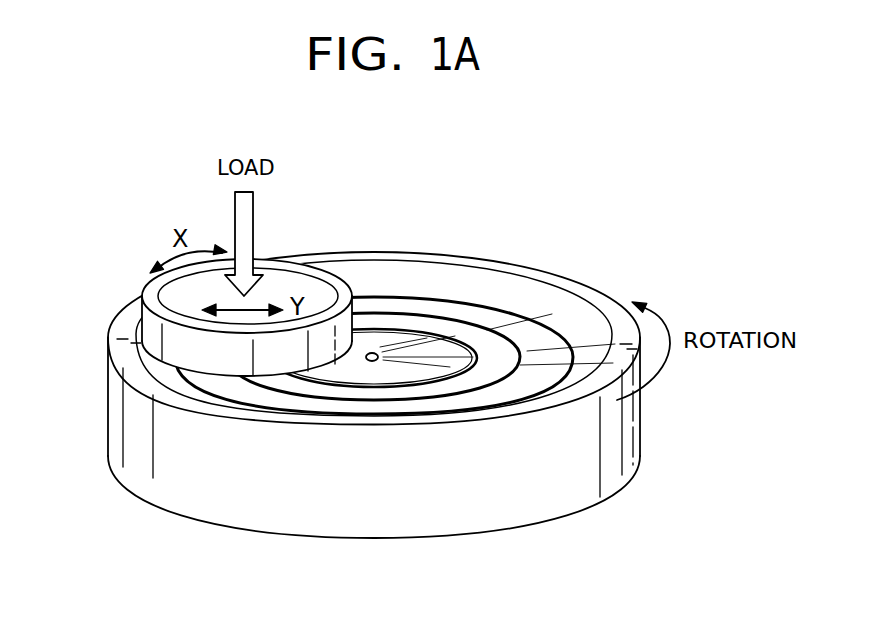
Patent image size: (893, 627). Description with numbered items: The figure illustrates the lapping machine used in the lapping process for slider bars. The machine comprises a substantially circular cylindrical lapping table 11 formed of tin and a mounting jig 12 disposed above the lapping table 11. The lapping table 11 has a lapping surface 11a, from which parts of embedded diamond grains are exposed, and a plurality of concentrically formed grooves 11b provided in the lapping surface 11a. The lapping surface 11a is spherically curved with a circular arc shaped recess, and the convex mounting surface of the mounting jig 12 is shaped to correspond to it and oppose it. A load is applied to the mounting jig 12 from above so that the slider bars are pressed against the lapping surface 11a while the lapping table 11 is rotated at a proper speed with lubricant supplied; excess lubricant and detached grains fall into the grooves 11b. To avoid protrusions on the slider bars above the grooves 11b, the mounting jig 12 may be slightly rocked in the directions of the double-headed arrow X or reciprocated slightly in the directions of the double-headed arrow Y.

The lapping table 11 is at (535, 497).
The lapping surface 11a is at (573, 310).
The grooves 11b is at (553, 388).
The mounting jig 12 is at (155, 293).